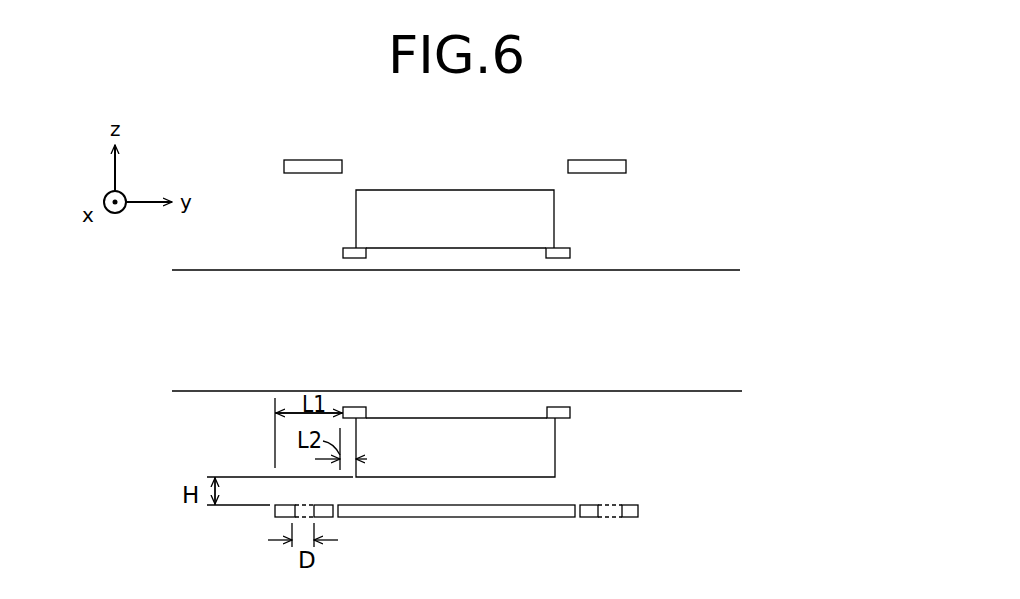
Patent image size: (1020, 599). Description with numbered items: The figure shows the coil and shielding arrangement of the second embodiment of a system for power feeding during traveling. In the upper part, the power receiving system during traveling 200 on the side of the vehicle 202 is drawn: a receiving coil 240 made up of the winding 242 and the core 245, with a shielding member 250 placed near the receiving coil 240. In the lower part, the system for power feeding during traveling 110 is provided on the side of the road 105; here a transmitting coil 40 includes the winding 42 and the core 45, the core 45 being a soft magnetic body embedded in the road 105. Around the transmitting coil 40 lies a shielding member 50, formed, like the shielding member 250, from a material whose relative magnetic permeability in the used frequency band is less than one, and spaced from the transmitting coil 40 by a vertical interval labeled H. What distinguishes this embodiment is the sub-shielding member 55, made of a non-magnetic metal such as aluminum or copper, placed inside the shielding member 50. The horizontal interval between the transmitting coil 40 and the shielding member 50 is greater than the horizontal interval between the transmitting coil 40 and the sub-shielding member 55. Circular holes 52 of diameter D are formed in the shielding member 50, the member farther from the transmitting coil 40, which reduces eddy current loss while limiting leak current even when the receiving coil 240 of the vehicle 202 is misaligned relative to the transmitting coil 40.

The power receiving system during traveling 200 is at (530, 214).
The shielding member 250 is at (325, 160).
The receiving coil 240 is at (504, 252).
The winding 242 is at (352, 258).
The core 245 is at (436, 248).
The vehicle 202 is at (683, 256).
The system for power feeding during traveling 110 is at (461, 433).
The road 105 is at (681, 402).
The winding 42 is at (352, 407).
The core 45 is at (433, 418).
The transmitting coil 40 is at (492, 416).
The shielding member 50 is at (445, 514).
The hole 52 is at (618, 512).
The sub-shielding member 55 is at (557, 517).